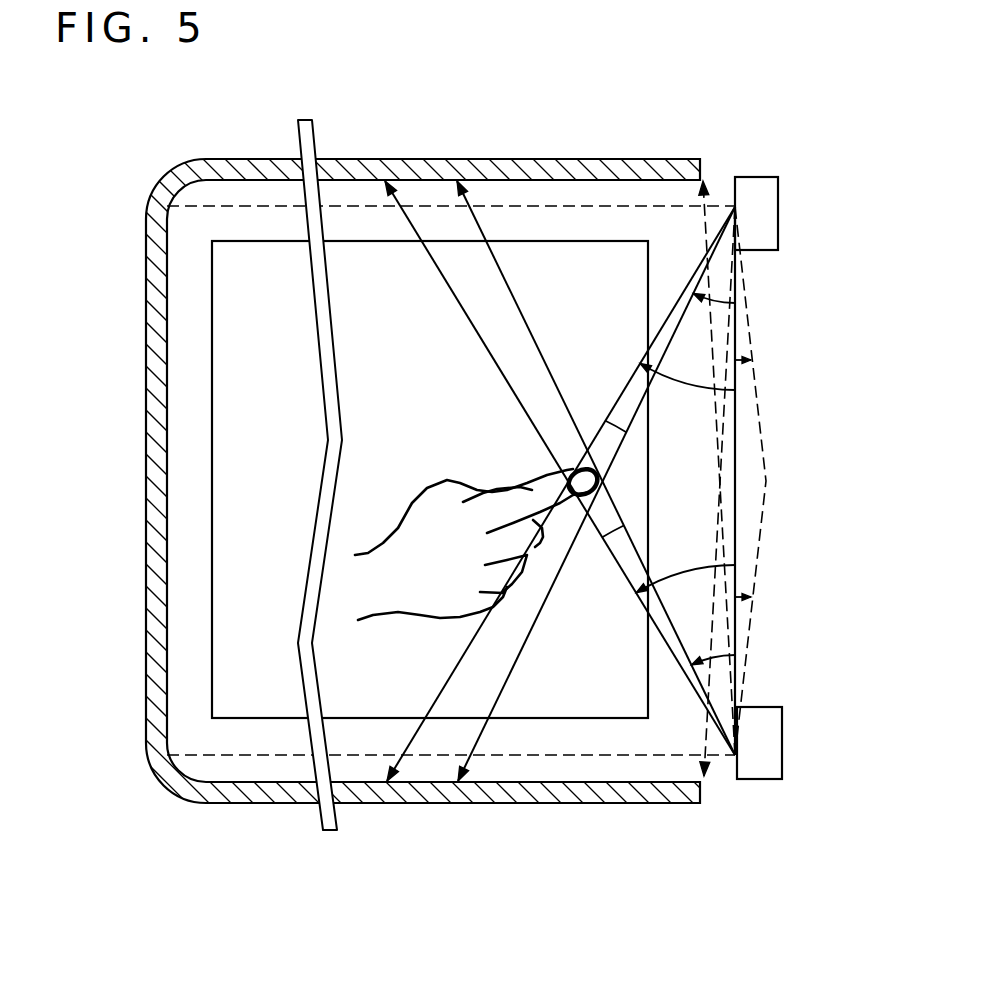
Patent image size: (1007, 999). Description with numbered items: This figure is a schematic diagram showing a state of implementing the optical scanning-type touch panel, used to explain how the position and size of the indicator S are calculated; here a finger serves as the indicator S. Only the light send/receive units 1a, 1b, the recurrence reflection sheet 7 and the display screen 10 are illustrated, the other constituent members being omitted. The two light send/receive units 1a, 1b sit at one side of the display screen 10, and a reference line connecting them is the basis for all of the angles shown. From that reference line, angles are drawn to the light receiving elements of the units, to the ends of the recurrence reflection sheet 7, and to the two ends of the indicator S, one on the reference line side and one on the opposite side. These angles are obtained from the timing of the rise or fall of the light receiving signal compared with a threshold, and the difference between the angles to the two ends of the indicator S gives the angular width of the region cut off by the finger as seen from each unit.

The light send/receive unit 1a is at (753, 177).
The light send/receive unit 1b is at (760, 783).
The recurrence reflection sheet 7 is at (150, 640).
The display screen 10 is at (227, 463).
The indicator S is at (530, 487).